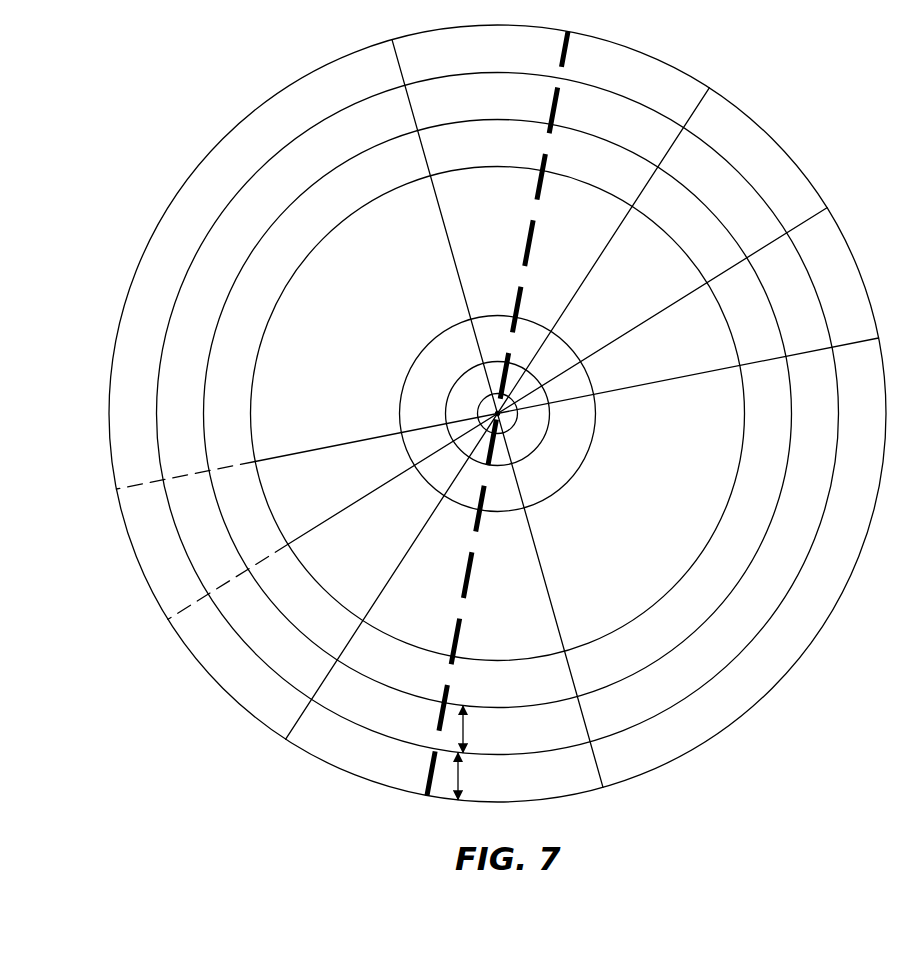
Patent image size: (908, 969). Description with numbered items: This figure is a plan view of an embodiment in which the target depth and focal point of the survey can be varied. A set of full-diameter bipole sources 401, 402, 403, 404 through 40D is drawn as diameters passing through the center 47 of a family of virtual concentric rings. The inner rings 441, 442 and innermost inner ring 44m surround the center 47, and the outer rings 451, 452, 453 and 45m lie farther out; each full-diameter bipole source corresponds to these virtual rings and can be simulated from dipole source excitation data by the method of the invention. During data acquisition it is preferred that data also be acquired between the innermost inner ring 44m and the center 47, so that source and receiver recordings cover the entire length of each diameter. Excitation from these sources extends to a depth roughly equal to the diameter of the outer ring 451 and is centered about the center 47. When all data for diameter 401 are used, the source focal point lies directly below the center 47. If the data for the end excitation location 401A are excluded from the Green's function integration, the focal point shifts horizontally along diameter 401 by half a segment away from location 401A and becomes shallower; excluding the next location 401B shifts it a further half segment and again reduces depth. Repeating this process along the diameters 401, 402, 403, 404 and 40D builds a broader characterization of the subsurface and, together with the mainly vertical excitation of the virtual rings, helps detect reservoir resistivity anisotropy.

The full-diameter bipole source 401 is at (532, 227).
The full-diameter bipole source 402 is at (613, 237).
The full-diameter bipole source 403 is at (677, 300).
The full-diameter bipole source 404 is at (717, 370).
The full-diameter bipole source 40D is at (553, 608).
The dipole source excitation location 401A is at (460, 777).
The dipole source excitation location 401B is at (465, 732).
The virtual inner concentric ring 441 is at (597, 430).
The virtual inner concentric ring 442 is at (544, 443).
The innermost inner concentric ring 44m is at (511, 432).
The virtual outer concentric ring 45m is at (708, 547).
The virtual outer concentric ring 453 is at (720, 610).
The virtual outer concentric ring 452 is at (717, 682).
The outer concentric ring 451 is at (712, 742).
The center 47 is at (477, 400).